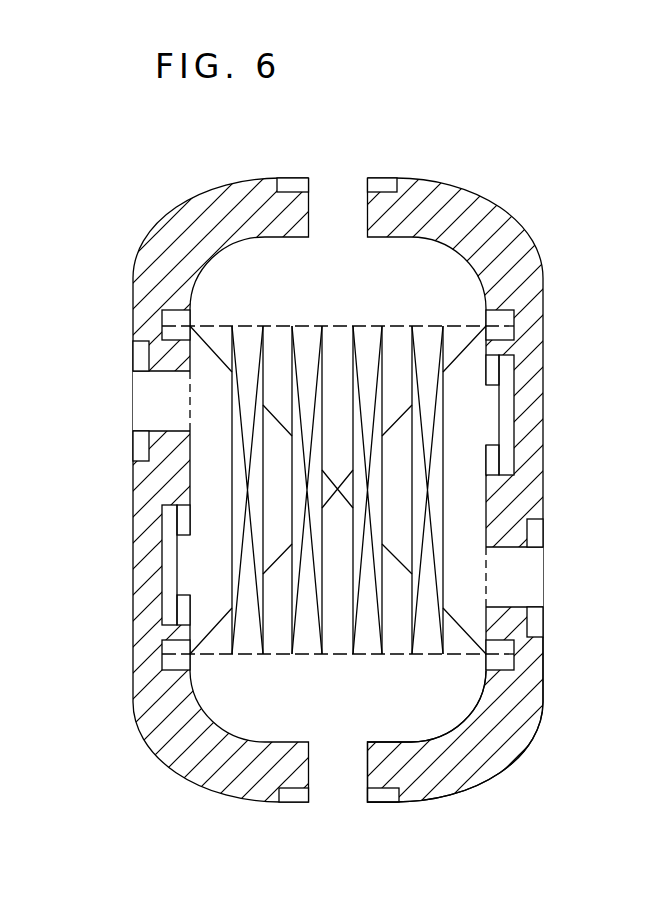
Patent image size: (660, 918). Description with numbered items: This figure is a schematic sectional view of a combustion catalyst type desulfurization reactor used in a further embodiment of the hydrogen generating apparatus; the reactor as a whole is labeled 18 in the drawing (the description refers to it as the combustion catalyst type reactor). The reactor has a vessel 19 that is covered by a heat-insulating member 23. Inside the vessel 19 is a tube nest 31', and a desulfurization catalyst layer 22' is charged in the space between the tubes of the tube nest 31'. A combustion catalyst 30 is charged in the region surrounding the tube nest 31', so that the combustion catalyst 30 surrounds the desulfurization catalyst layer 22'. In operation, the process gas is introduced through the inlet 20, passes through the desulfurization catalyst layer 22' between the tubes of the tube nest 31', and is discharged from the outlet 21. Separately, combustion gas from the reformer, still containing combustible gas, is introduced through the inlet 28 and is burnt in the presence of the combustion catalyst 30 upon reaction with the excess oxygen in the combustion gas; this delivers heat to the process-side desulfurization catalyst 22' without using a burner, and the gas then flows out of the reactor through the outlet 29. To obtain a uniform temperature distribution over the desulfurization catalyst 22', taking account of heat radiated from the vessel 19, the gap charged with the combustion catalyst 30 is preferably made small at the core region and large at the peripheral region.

The spring assembly 18 is at (495, 213).
The vessel 19 is at (477, 285).
The inlet 20 is at (336, 173).
The outlet 21 is at (340, 813).
The desulfurization catalyst layer 22' is at (416, 490).
The heat-insulating member 23 is at (513, 711).
The inlet 28 is at (552, 577).
The outlet 29 is at (131, 405).
The combustion catalyst 30 is at (455, 388).
The tube nest 31' is at (380, 490).